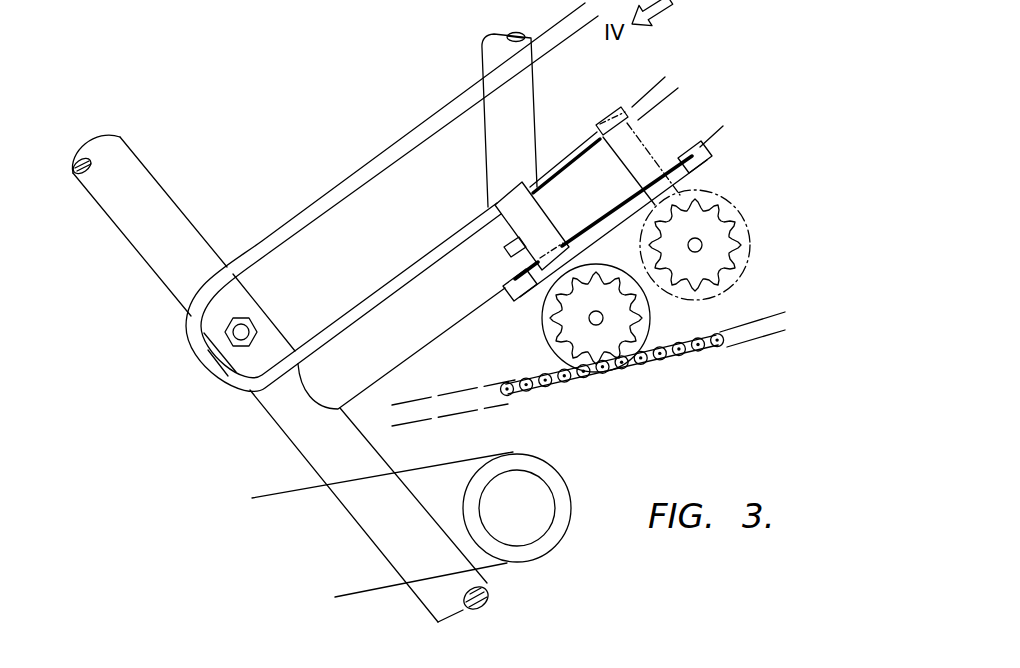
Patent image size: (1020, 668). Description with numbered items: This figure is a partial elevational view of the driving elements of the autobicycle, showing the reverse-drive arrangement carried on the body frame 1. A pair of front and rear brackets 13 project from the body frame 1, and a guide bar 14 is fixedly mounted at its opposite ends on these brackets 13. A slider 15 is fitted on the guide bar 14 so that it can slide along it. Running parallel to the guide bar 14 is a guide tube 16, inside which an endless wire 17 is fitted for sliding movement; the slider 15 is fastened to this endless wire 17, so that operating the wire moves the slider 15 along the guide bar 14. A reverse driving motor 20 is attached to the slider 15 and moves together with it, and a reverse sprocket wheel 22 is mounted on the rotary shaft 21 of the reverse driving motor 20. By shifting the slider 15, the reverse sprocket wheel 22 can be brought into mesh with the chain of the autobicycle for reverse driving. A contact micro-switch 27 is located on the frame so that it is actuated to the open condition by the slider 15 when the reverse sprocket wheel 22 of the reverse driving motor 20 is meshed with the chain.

The body frame 1 is at (172, 222).
The brackets 13 is at (692, 150).
The guide bar 14 is at (610, 228).
The slider 15 is at (543, 232).
The guide tube 16 is at (413, 280).
The endless wire 17 is at (565, 153).
The reverse driving motor 20 is at (543, 327).
The rotary shaft 21 is at (596, 326).
The reverse sprocket wheel 22 is at (553, 355).
The contact micro-switch 27 is at (514, 254).